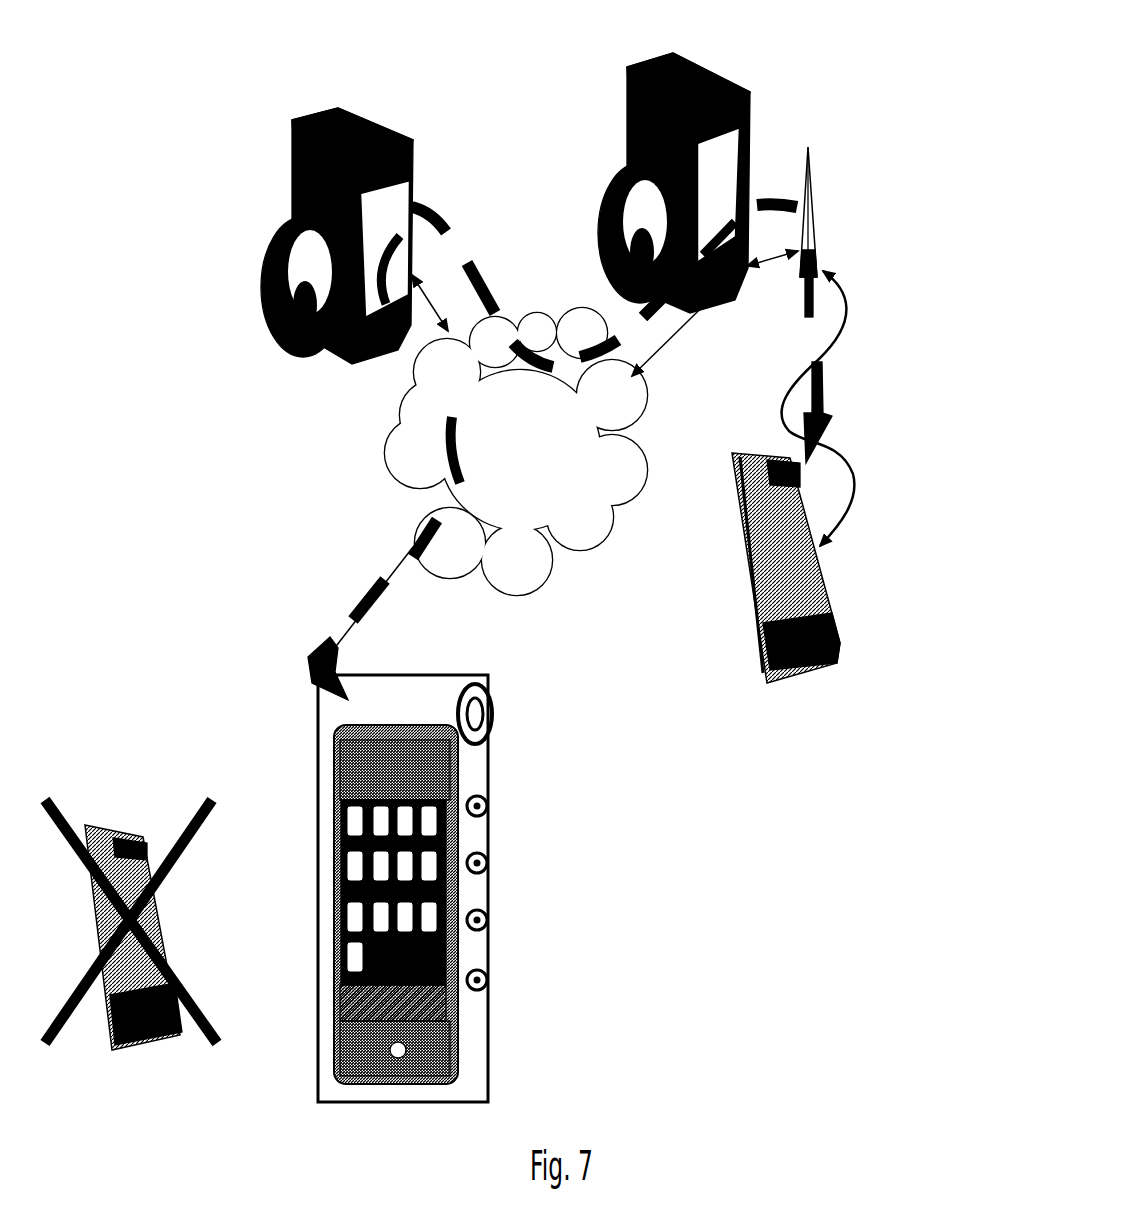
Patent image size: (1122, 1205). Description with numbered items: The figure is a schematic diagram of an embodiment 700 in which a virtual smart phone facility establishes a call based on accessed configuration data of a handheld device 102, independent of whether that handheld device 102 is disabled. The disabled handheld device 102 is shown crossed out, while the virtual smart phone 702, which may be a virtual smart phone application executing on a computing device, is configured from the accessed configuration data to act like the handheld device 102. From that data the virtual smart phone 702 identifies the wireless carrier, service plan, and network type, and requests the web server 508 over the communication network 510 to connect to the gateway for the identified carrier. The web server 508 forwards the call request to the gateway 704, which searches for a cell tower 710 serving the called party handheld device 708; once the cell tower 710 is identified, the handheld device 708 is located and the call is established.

The embodiment 700 is at (93, 172).
The web server 508 is at (407, 138).
The gateway 704 is at (747, 90).
The cell tower 710 is at (815, 197).
The communication network 510 is at (398, 488).
The virtual smart phone 702 is at (462, 675).
The called party handheld device 708 is at (828, 603).
The handheld device 102 is at (138, 840).